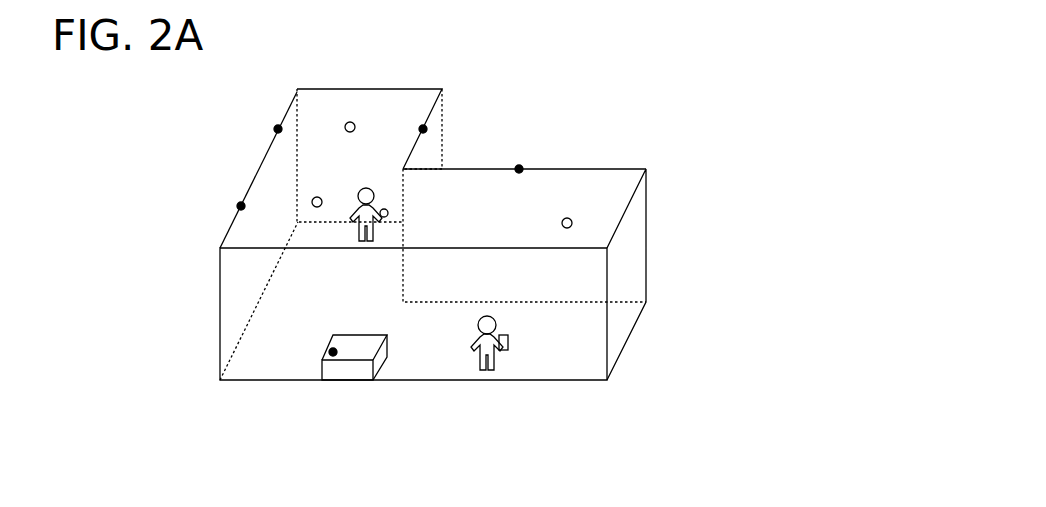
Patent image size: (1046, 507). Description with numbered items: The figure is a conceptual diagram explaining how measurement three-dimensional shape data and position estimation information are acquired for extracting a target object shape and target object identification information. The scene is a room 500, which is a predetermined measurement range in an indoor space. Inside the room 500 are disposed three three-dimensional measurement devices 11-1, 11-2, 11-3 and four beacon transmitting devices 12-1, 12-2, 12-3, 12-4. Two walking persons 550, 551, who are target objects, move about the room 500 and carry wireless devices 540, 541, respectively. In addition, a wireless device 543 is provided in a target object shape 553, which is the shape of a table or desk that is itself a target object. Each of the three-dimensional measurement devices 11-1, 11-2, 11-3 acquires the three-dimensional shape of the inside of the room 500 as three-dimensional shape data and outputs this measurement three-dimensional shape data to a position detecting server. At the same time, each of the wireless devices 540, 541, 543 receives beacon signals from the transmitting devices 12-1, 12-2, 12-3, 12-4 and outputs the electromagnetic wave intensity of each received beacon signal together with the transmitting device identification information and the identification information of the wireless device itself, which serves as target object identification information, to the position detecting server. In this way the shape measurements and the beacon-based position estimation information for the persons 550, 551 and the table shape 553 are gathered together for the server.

The room 500 is at (428, 88).
The three-dimensional measurement device 11-1 is at (573, 223).
The three-dimensional measurement device 11-2 is at (350, 121).
The three-dimensional measurement device 11-3 is at (317, 196).
The beacon transmitting device 12-1 is at (520, 168).
The beacon transmitting device 12-2 is at (425, 128).
The beacon transmitting device 12-3 is at (277, 128).
The beacon transmitting device 12-4 is at (240, 206).
The wireless device 540 is at (507, 352).
The wireless device 541 is at (387, 210).
The wireless device 543 is at (333, 352).
The walking person 550 is at (484, 372).
The walking person 551 is at (367, 187).
The target object shape 553 is at (380, 362).